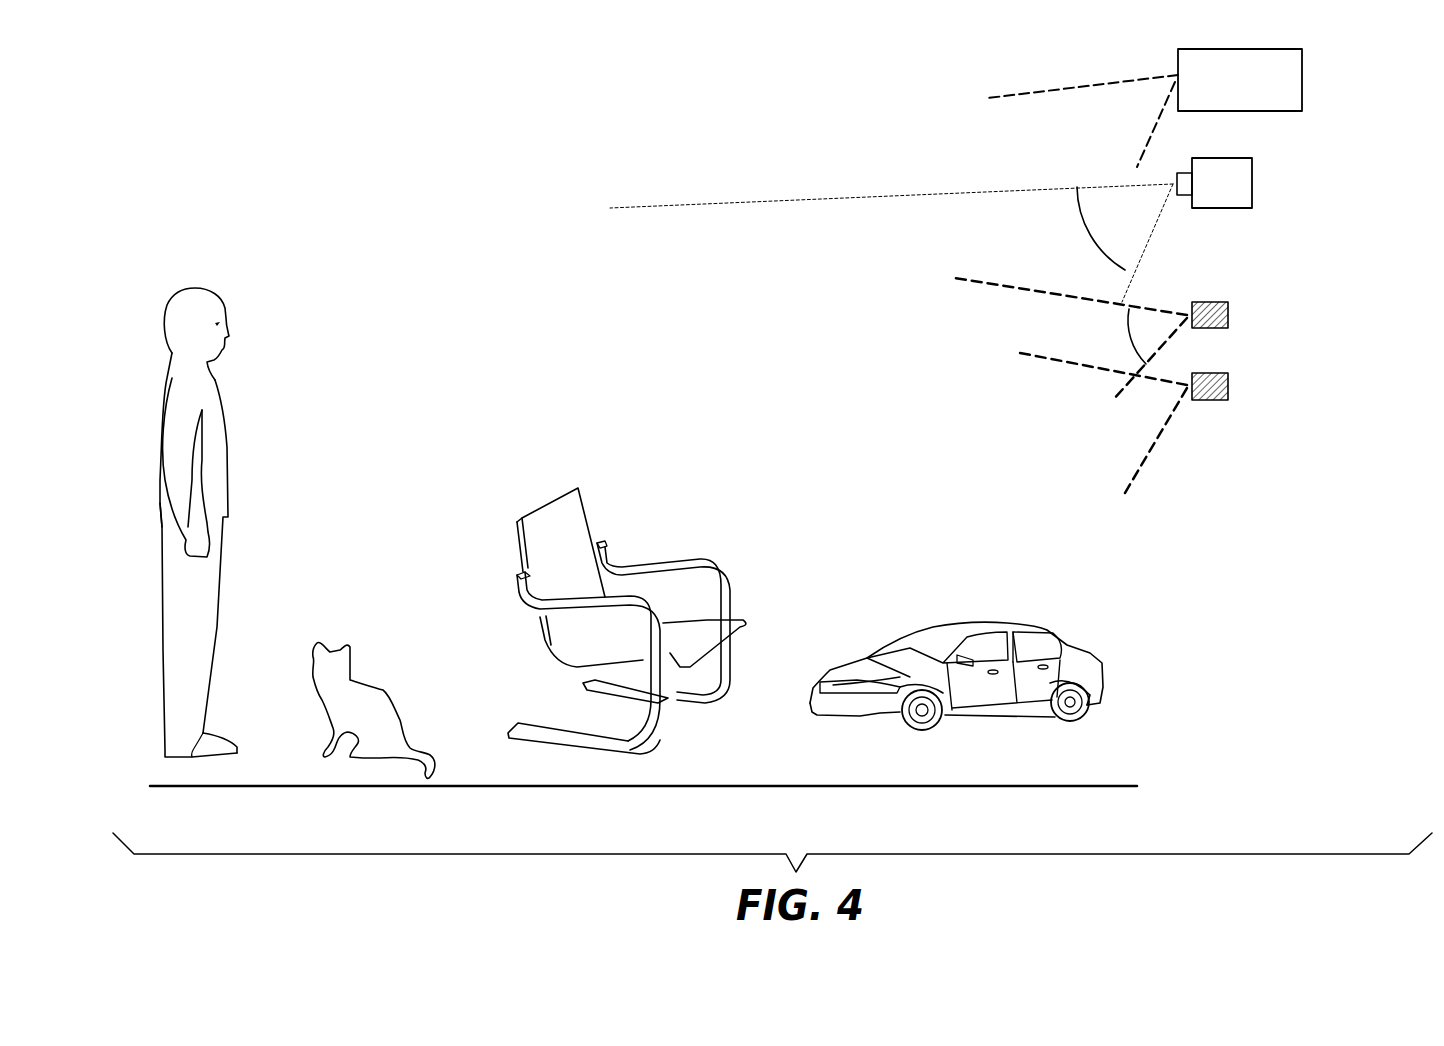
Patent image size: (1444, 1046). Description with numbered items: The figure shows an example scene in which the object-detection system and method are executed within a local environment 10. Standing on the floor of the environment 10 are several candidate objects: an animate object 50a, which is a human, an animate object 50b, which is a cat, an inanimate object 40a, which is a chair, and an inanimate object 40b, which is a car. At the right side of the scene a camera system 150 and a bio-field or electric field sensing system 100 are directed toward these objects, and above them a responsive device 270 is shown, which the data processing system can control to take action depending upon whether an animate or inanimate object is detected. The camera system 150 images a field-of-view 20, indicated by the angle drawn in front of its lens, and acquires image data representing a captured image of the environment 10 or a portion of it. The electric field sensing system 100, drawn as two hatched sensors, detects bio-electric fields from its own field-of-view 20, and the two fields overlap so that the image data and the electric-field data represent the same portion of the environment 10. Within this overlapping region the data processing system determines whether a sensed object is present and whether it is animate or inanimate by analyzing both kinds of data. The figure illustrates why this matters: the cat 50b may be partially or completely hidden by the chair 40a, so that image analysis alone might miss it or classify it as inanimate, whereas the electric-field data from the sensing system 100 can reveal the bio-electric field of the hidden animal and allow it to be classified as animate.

The local environment 10 is at (467, 150).
The animate object 50a is at (165, 282).
The animate object 50b is at (330, 623).
The inanimate object 40a is at (538, 485).
The inanimate object 40b is at (882, 622).
The responsive device 270 is at (1302, 80).
The camera system 150 is at (1252, 182).
The field-of-view 20 is at (1084, 227).
The electric field sensing system 100 is at (1228, 315).